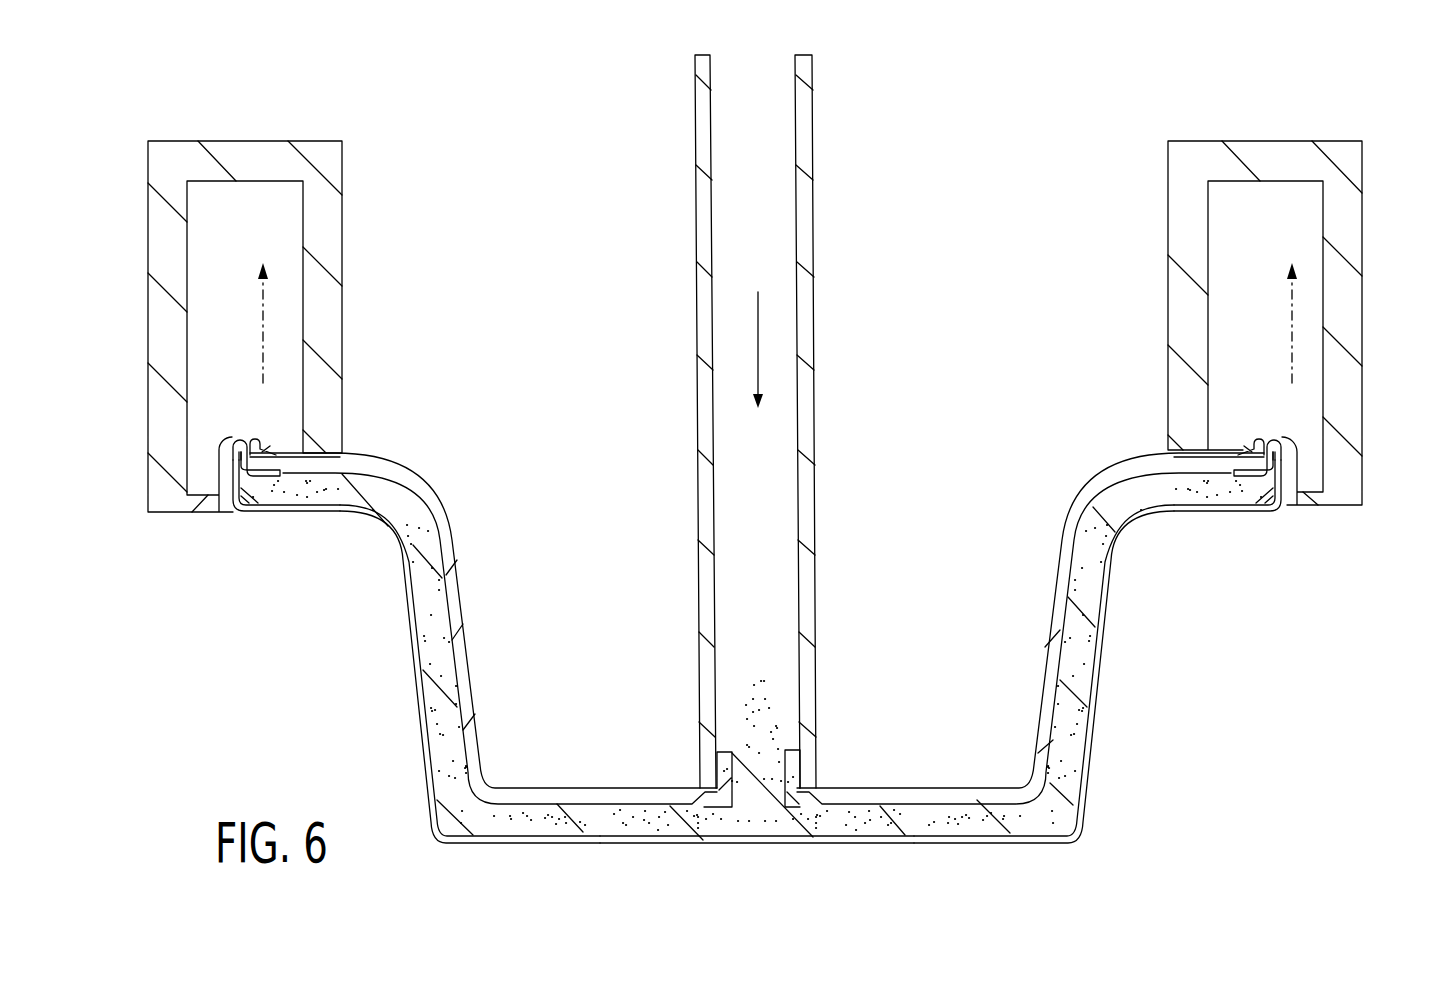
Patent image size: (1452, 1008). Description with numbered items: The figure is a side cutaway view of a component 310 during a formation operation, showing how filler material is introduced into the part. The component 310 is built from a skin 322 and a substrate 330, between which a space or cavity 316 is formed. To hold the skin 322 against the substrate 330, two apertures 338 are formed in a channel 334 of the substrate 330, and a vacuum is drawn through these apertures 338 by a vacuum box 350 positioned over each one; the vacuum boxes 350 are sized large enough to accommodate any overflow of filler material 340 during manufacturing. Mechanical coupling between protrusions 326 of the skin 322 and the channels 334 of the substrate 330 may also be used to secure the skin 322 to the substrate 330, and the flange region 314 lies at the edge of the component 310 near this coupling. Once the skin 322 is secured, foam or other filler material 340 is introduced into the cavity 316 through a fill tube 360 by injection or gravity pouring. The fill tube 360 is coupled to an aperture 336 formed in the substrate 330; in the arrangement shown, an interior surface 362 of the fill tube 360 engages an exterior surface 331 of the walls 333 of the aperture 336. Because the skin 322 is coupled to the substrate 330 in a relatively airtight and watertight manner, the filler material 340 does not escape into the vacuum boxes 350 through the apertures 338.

The component 310 is at (1135, 833).
The shell flange 314 is at (322, 525).
The cavity 316 is at (1078, 665).
The skin 322 is at (733, 847).
The protrusion 326 is at (233, 445).
The substrate 330 is at (456, 575).
The exterior surface 331 is at (805, 770).
The walls 333 is at (795, 757).
The channel 334 is at (265, 443).
The aperture 336 is at (753, 740).
The aperture 338 is at (245, 425).
The filler material 340 is at (1093, 507).
The vacuum box 350 is at (252, 141).
The fill tube 360 is at (805, 137).
The interior surface 362 is at (720, 512).